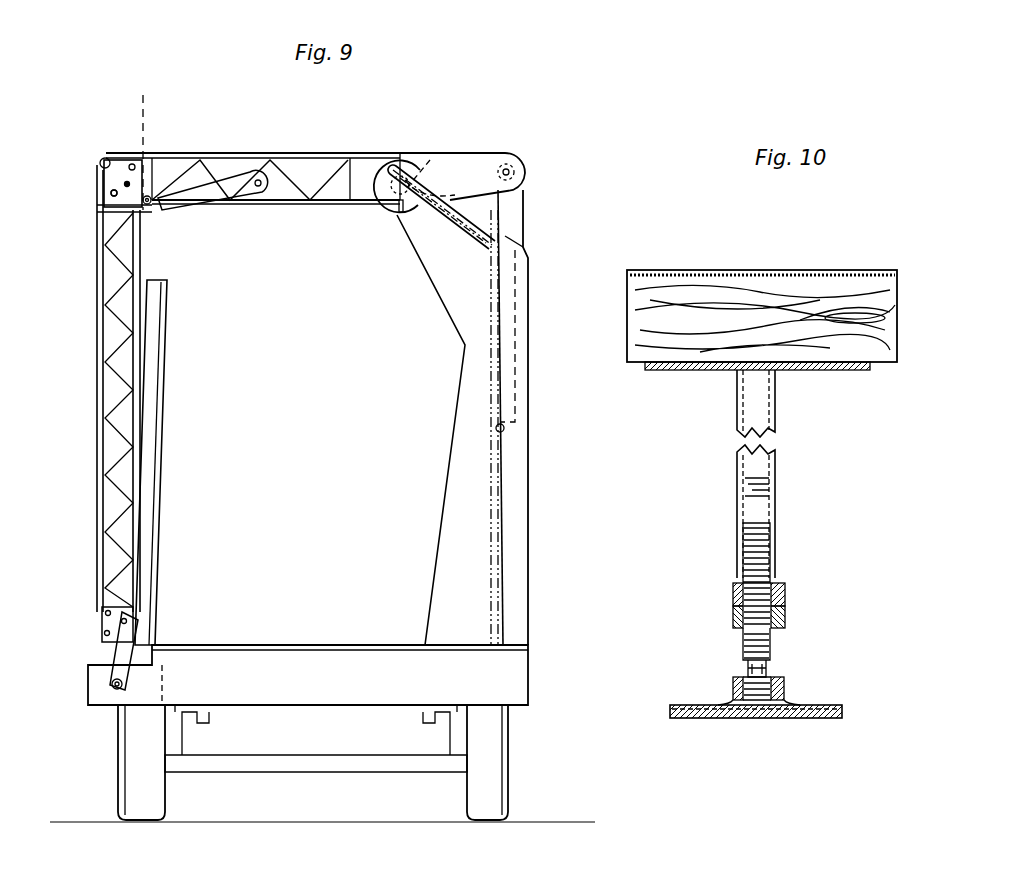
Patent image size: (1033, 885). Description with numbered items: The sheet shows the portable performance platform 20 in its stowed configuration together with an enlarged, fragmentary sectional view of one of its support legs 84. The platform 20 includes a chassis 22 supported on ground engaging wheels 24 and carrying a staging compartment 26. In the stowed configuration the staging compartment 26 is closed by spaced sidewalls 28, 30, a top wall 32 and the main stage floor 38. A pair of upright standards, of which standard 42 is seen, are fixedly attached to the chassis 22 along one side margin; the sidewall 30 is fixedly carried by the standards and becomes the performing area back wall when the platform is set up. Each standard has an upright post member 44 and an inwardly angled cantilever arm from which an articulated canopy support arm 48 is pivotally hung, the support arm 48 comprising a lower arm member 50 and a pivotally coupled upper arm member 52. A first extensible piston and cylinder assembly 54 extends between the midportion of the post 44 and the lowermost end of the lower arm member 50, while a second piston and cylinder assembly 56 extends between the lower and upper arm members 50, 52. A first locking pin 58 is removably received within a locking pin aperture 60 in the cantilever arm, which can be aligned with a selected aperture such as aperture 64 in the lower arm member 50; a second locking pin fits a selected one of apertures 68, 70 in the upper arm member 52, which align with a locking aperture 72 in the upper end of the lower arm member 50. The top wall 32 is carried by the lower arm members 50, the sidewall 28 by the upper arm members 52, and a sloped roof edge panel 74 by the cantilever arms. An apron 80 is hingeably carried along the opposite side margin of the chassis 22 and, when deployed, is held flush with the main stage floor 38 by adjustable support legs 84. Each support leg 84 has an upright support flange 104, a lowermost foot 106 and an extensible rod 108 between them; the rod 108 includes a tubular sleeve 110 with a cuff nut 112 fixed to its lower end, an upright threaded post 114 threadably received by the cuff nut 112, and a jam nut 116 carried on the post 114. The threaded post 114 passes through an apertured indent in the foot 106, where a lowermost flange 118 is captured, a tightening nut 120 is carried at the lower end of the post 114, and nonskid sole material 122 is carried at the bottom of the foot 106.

In FIG. 9, the portable performance platform 20 is at (445, 105).
In FIG. 9, the chassis 22 is at (520, 708).
In FIG. 9, the ground engaging wheels 24 is at (130, 808).
In FIG. 9, the staging compartment 26 is at (212, 258).
In FIG. 9, the sidewall 28 is at (100, 428).
In FIG. 9, the sidewall 30 is at (500, 562).
In FIG. 9, the top wall 32 is at (308, 152).
In FIG. 9, the main stage floor 38 is at (268, 645).
In FIG. 10, the main stage floor 38 is at (825, 268).
In FIG. 9, the upright standard 42 is at (515, 455).
In FIG. 9, the upright post member 44 is at (407, 518).
In FIG. 9, the articulated canopy support arm 48 is at (115, 130).
In FIG. 9, the lower arm member 50 is at (252, 206).
In FIG. 9, the upper arm member 52 is at (143, 263).
In FIG. 9, the first extensible piston and cylinder assembly 54 is at (515, 212).
In FIG. 9, the second piston and cylinder assembly 56 is at (235, 185).
In FIG. 9, the first locking pin 58 is at (397, 218).
In FIG. 9, the locking pin aperture 60 is at (392, 210).
In FIG. 9, the locking pin aperture 64 is at (440, 160).
In FIG. 9, the locking pin aperture 68 is at (124, 183).
In FIG. 9, the locking pin aperture 70 is at (143, 95).
In FIG. 9, the locking aperture 72 is at (112, 195).
In FIG. 9, the sloped roof edge panel 74 is at (455, 192).
In FIG. 9, the apron 80 is at (162, 437).
In FIG. 10, the adjustable support leg 84 is at (788, 516).
In FIG. 10, the upright support flange 104 is at (803, 370).
In FIG. 10, the lowermost foot 106 is at (815, 707).
In FIG. 10, the extensible rod 108 is at (780, 560).
In FIG. 10, the tubular sleeve 110 is at (737, 497).
In FIG. 10, the cuff nut 112 is at (735, 600).
In FIG. 10, the upright threaded post 114 is at (772, 640).
In FIG. 10, the jam nut 116 is at (735, 707).
In FIG. 10, the lowermost flange 118 is at (742, 716).
In FIG. 10, the tightening nut 120 is at (785, 612).
In FIG. 10, the nonskid sole material 122 is at (775, 716).